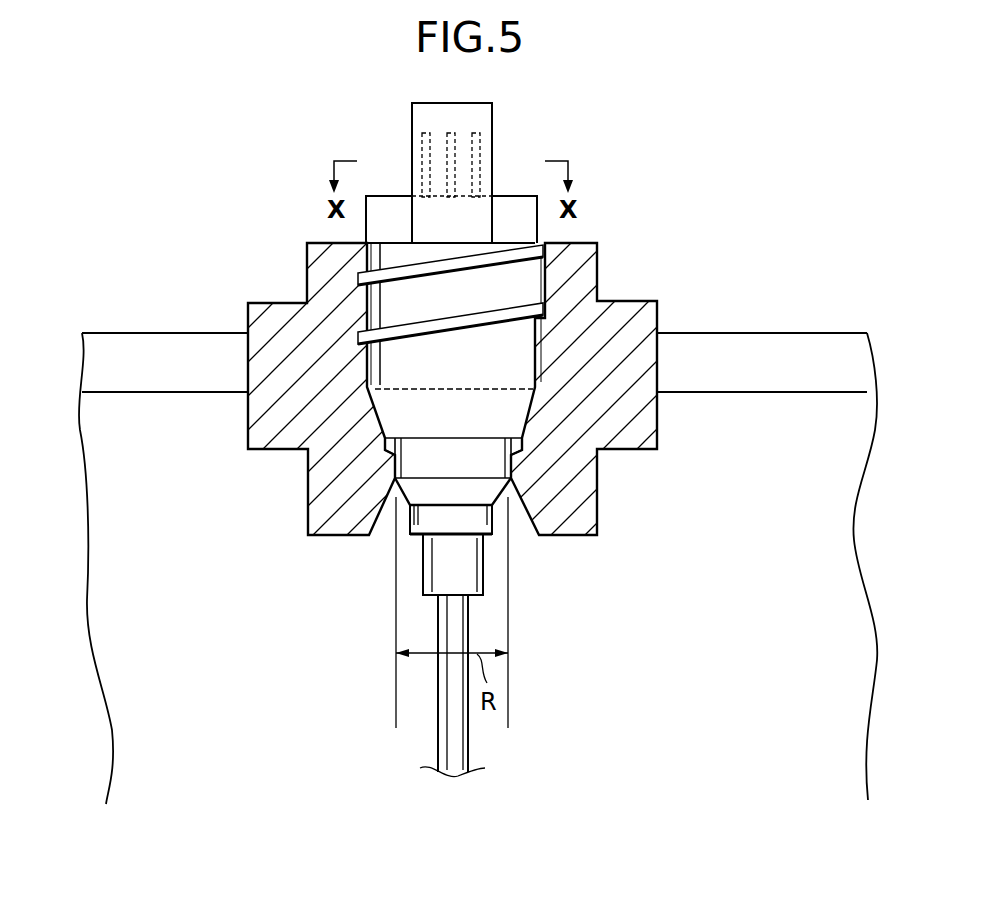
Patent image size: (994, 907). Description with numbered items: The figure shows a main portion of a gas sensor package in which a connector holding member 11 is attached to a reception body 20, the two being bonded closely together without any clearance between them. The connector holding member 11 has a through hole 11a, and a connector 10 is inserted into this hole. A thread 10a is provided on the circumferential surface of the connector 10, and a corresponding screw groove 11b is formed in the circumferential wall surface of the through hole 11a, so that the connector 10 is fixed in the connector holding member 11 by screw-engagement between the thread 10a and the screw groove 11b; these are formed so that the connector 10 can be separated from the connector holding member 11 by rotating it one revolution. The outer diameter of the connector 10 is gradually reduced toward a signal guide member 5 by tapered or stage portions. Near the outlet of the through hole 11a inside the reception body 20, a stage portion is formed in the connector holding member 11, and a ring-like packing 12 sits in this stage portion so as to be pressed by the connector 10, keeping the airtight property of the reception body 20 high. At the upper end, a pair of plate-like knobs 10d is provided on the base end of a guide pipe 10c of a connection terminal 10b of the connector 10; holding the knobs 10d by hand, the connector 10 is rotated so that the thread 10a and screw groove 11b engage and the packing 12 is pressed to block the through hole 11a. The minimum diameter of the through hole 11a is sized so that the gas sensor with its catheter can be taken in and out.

The signal guide member 5 is at (438, 749).
The connector 10 is at (505, 335).
The thread 10a is at (547, 302).
The connection terminal 10b is at (478, 132).
The guide pipe 10c is at (412, 120).
The knobs 10d is at (388, 196).
The connector holding member 11 is at (447, 360).
The through hole 11a is at (372, 382).
The screw groove 11b is at (373, 292).
The ring-like packing 12 is at (530, 448).
The reception body 20 is at (745, 333).